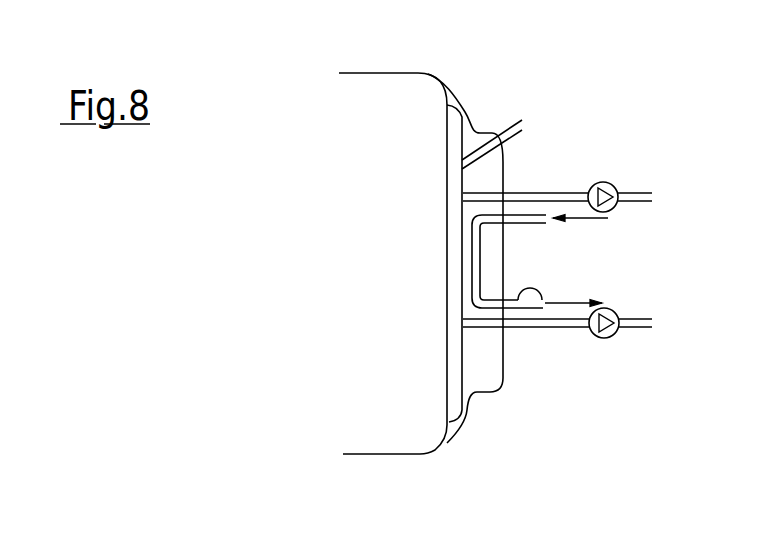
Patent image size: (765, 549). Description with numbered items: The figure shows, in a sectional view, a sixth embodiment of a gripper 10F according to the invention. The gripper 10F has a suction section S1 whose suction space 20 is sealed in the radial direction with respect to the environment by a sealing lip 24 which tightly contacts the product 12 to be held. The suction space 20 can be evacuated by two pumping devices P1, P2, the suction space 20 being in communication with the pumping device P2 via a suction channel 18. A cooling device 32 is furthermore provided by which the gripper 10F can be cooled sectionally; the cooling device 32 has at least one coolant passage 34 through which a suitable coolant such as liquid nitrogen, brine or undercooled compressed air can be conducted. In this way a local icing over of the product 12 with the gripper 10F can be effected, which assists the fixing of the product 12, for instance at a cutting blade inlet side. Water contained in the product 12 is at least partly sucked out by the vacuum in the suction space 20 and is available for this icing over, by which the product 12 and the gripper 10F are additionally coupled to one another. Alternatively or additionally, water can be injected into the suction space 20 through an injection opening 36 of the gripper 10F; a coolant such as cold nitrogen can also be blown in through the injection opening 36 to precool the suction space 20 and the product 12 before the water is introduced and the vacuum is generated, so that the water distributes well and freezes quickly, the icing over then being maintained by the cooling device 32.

The gripper 10F is at (498, 265).
The product 12 is at (370, 454).
The suction space 20 is at (447, 268).
The sealing lip 24 is at (465, 423).
The injection opening 36 is at (522, 131).
The cooling device 32 is at (553, 266).
The coolant passage 34 is at (543, 302).
The suction channel 18 is at (575, 328).
The pumping device P1 is at (557, 184).
The pumping device P2 is at (620, 310).
The suction section S1 is at (433, 354).